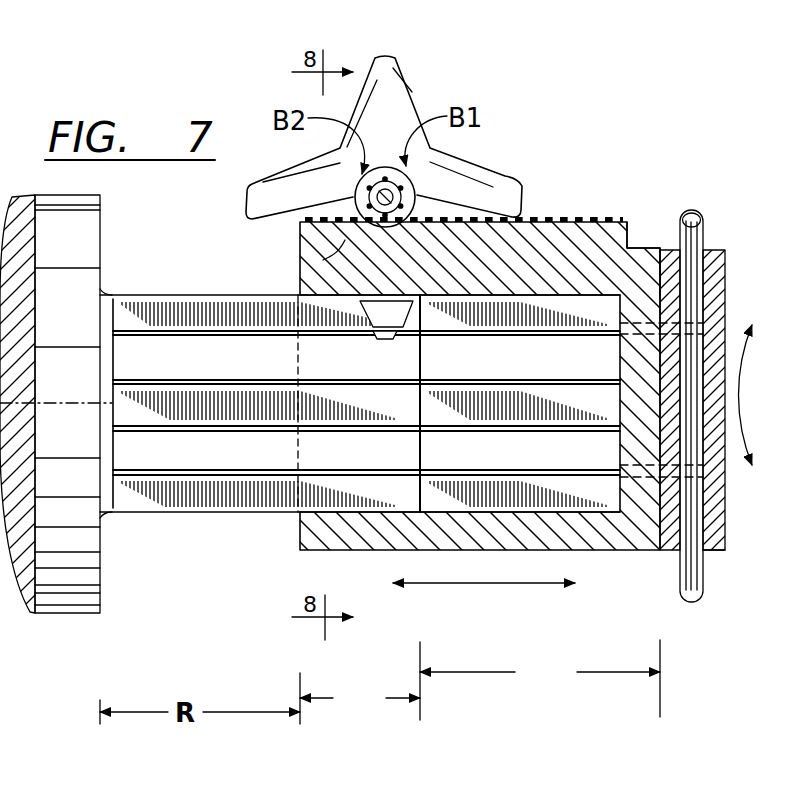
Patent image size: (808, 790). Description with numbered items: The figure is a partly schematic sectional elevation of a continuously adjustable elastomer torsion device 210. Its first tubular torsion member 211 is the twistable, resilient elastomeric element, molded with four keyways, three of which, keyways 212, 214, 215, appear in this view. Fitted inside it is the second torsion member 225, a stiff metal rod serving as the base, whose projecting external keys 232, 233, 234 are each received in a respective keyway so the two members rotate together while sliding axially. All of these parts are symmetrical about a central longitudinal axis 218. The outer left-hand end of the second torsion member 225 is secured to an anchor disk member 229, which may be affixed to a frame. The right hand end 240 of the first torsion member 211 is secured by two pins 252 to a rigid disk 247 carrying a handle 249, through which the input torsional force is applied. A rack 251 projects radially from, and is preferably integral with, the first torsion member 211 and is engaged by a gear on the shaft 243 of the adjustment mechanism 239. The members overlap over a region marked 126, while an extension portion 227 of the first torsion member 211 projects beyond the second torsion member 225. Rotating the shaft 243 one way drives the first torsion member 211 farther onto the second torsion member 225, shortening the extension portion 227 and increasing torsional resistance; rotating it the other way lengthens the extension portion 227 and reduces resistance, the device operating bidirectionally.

The continuously adjustable torsion device 210 is at (530, 98).
The first tubular torsion member 211 is at (643, 270).
The keyway 212 is at (445, 323).
The keyway 214 is at (553, 470).
The keyway 215 is at (550, 392).
The central longitudinal axis 218 is at (68, 404).
The second torsion member 225 is at (248, 315).
The extension portion 227 is at (540, 678).
The anchor disk member 229 is at (72, 232).
The external key 232 is at (147, 318).
The external key 233 is at (237, 411).
The external key 234 is at (168, 512).
The adjustment mechanism 239 is at (348, 186).
The right hand end of torsion member 240 is at (592, 551).
The shaft 243 is at (402, 190).
The rigid disk 247 is at (723, 548).
The handle 249 is at (692, 580).
The rack 251 is at (628, 234).
The pins 252 is at (728, 289).
The length 126 is at (360, 681).